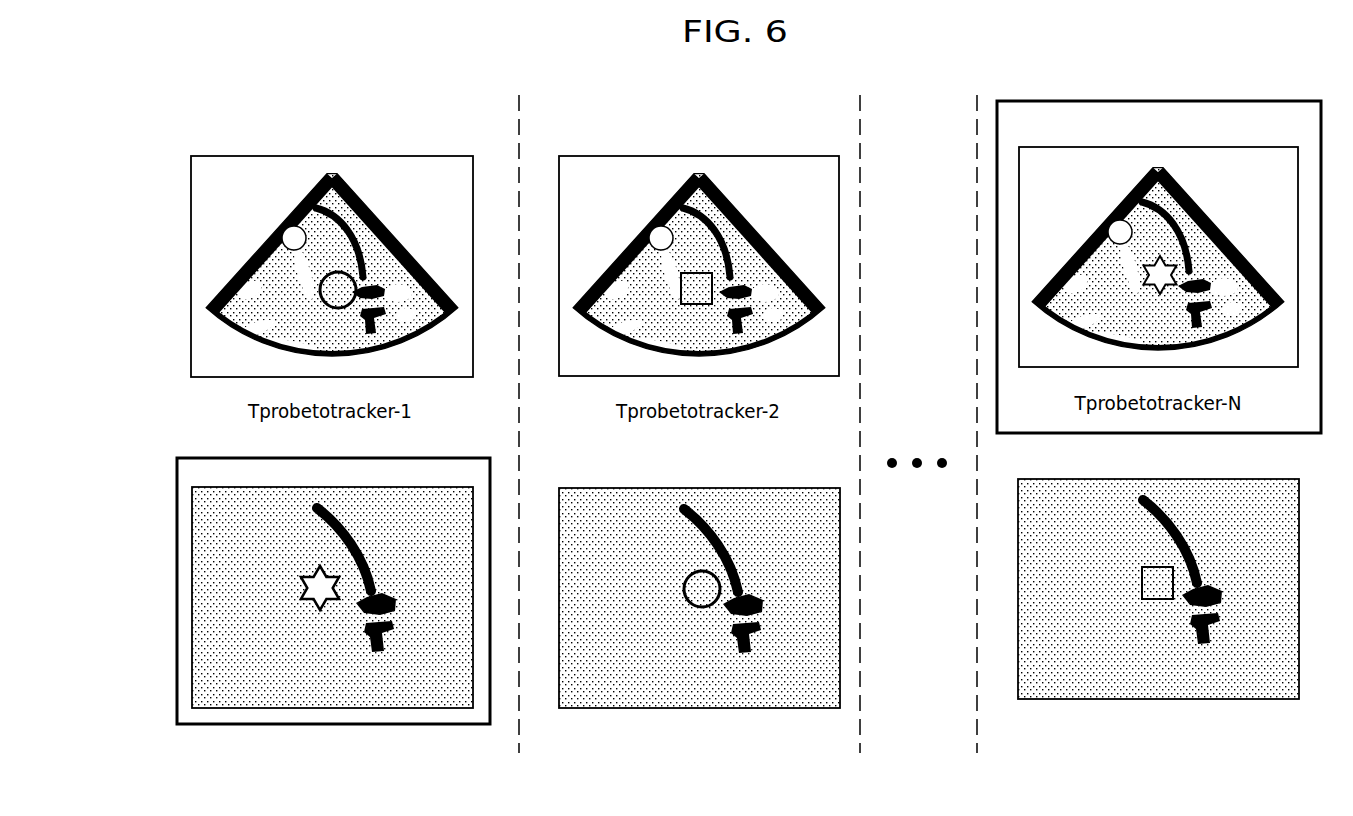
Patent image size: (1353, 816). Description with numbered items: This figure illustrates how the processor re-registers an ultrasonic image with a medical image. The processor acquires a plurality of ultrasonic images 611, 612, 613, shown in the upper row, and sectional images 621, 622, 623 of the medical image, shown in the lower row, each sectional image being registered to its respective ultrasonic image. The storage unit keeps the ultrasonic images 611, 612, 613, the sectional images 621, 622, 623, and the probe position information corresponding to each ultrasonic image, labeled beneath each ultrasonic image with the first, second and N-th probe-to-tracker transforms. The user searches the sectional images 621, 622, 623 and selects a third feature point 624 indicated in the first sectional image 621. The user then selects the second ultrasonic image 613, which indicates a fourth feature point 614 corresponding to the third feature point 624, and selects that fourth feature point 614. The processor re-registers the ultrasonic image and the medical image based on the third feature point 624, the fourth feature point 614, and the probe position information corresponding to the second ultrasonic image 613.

The ultrasonic image 611 is at (427, 153).
The ultrasonic image 612 is at (795, 153).
The second ultrasonic image 613 is at (1159, 267).
The fourth feature point 614 is at (1160, 256).
The first sectional image 621 is at (311, 591).
The sectional image 622 is at (795, 487).
The sectional image 623 is at (1253, 479).
The third feature point 624 is at (302, 594).